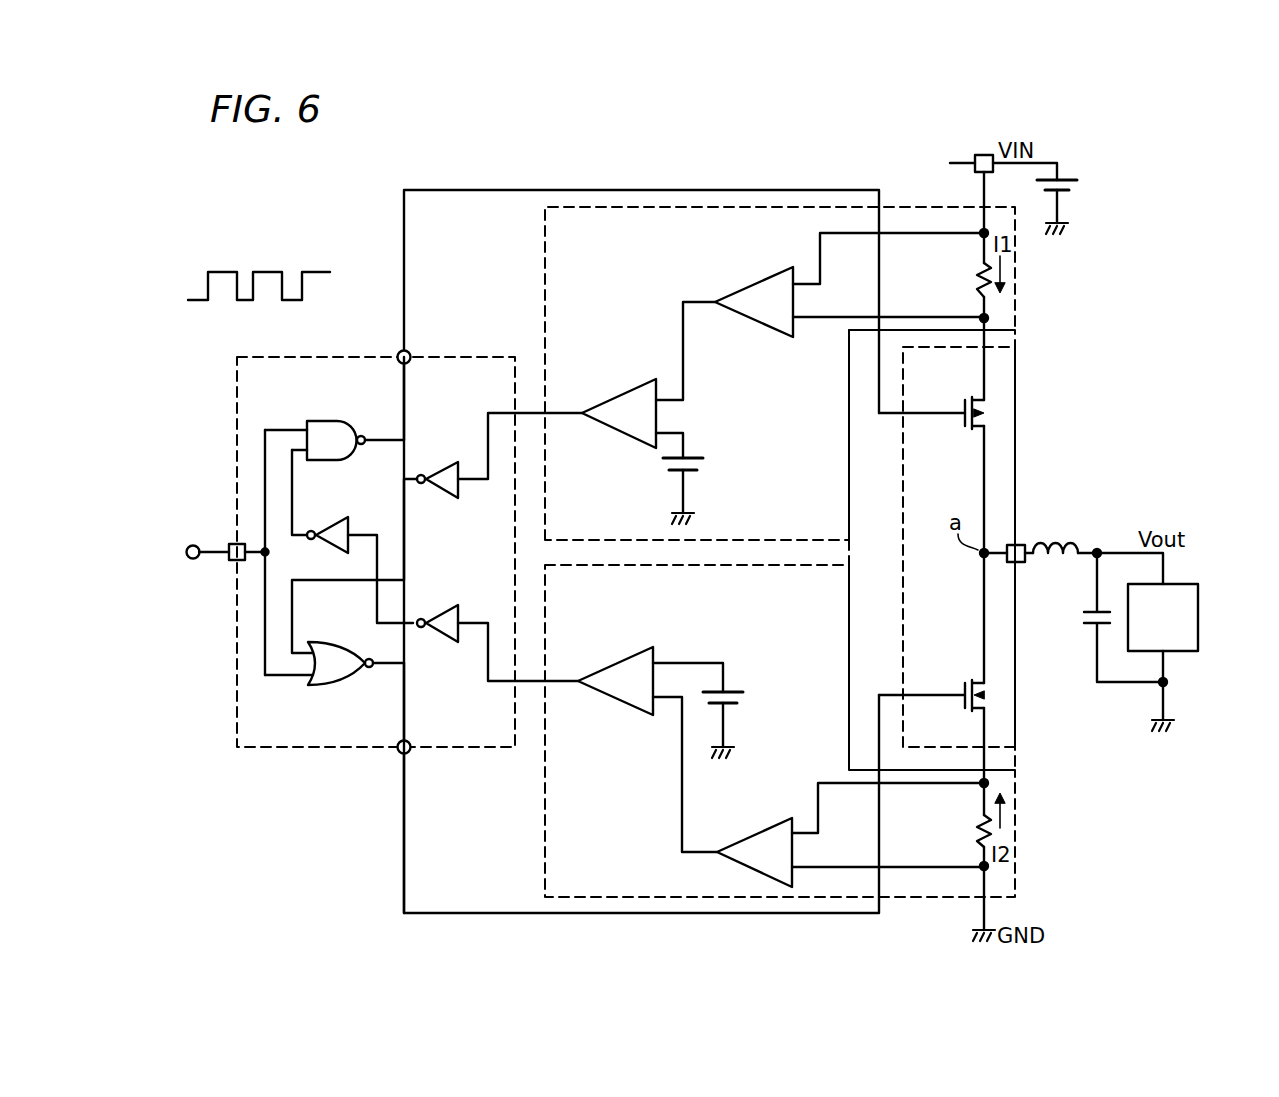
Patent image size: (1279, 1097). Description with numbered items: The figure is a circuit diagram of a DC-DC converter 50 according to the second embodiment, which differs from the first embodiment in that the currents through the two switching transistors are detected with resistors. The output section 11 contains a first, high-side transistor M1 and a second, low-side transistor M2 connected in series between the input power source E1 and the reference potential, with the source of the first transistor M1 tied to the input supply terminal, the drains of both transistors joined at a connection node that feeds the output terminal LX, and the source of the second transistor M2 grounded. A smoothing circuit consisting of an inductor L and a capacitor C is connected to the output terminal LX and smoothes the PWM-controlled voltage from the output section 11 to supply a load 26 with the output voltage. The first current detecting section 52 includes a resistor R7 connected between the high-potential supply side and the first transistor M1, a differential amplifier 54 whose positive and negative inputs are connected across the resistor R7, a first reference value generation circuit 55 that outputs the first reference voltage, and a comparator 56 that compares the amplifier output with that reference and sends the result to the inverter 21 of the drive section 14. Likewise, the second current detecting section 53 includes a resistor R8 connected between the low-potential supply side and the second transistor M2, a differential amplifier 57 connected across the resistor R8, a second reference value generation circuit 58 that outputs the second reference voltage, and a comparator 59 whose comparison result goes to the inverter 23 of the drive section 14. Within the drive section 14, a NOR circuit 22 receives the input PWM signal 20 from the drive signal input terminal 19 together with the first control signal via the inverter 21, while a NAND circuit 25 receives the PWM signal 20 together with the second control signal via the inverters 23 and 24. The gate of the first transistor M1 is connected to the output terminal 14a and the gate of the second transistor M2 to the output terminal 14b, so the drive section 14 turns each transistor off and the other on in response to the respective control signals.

The DC-DC converter 50 is at (826, 168).
The PWM signal 20 is at (281, 272).
The drive section 14 is at (443, 355).
The output terminal 14a is at (399, 352).
The output terminal 14b is at (400, 753).
The drive signal input terminal 19 is at (232, 545).
The NAND circuit 25 is at (319, 421).
The inverter 24 is at (318, 533).
The inverter 21 is at (432, 470).
The inverter 23 is at (444, 639).
The NOR circuit 22 is at (321, 687).
The first current detecting section 52 is at (545, 257).
The second current detecting section 53 is at (543, 828).
The output section 11 is at (1018, 378).
The differential amplifier 54 is at (752, 283).
The comparator 56 is at (616, 393).
The first reference value generation circuit 55 is at (700, 472).
The comparator 59 is at (615, 660).
The second reference value generation circuit 58 is at (740, 705).
The differential amplifier 57 is at (755, 832).
The load 26 is at (1198, 618).
The input power source E1 is at (1070, 178).
The resistor R7 is at (978, 281).
The resistor R8 is at (978, 833).
The first transistor M1 is at (962, 407).
The second transistor M2 is at (962, 688).
The output terminal LX is at (1017, 536).
The inductor L is at (1072, 545).
The capacitor C is at (1099, 617).